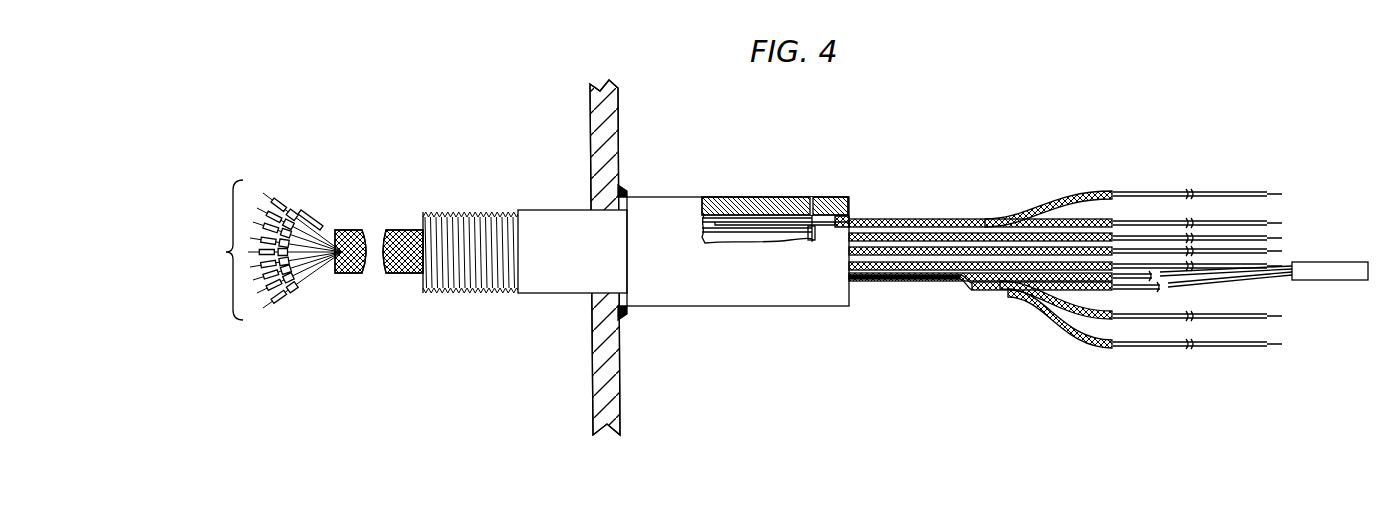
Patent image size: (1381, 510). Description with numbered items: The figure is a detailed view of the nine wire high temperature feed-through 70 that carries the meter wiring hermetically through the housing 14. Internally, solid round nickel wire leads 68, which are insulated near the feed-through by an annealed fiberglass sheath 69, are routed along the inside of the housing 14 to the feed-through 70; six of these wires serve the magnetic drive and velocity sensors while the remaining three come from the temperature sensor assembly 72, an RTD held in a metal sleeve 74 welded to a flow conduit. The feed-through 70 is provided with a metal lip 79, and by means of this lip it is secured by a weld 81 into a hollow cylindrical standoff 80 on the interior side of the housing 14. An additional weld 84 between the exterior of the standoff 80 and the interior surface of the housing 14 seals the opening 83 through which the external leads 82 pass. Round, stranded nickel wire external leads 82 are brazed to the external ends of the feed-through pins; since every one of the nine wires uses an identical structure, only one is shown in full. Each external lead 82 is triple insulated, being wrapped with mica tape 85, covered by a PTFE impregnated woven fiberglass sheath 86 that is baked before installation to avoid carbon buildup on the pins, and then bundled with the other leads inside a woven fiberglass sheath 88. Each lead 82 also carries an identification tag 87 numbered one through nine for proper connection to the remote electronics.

The housing 14 is at (590, 129).
The nickel wire leads 68 is at (1164, 347).
The annealed fiberglass sheath 69 is at (1039, 308).
The nine wire high temperature feed-through 70 is at (815, 201).
The temperature sensor assembly 72 is at (1340, 282).
The metal sleeve 74 is at (1334, 261).
The metal lip 79 is at (838, 210).
The hollow cylindrical standoff 80 is at (740, 307).
The weld 81 is at (850, 211).
The external leads 82 is at (270, 250).
The opening 83 is at (579, 303).
The weld 84 is at (627, 191).
The mica tape 85 is at (307, 287).
The woven fiberglass sheath 86 is at (289, 205).
The identification tag 87 is at (297, 202).
The woven fiberglass sheath 88 is at (356, 275).